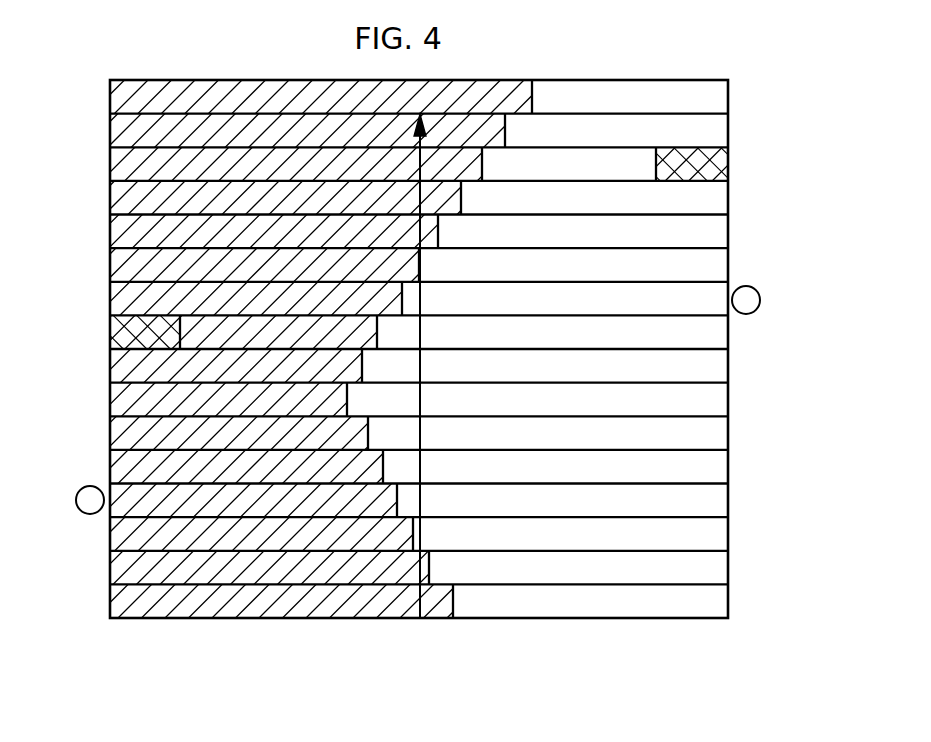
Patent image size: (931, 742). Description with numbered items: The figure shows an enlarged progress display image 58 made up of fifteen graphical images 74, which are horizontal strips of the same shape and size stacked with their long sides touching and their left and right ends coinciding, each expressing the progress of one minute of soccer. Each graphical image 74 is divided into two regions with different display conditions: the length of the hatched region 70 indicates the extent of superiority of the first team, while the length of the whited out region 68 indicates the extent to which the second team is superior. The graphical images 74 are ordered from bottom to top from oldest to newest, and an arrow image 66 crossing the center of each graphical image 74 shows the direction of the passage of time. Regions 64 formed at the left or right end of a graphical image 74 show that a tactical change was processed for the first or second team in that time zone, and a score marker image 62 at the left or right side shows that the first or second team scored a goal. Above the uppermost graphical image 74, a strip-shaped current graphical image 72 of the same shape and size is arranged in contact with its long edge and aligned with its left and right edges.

The progress display image 58 is at (779, 382).
The score marker image 62 is at (76, 500).
The region with different display condition 64 is at (110, 333).
The arrow image 66 is at (416, 605).
The whited out region 68 is at (522, 606).
The hatched region 70 is at (153, 612).
The current graphical image 72 is at (110, 97).
The graphical image 74 is at (87, 618).